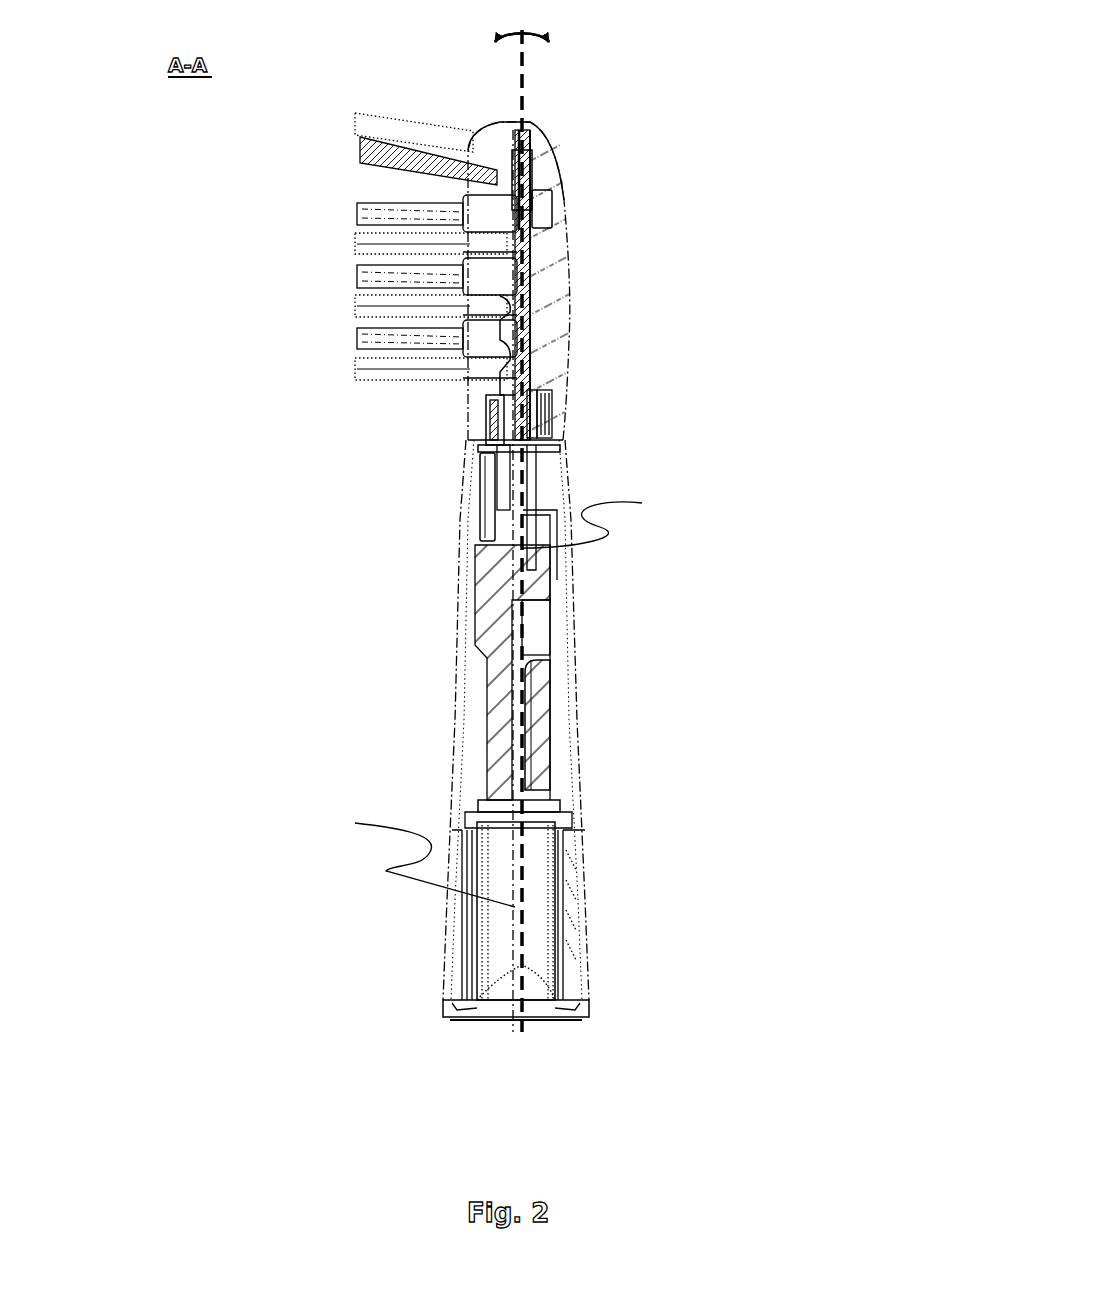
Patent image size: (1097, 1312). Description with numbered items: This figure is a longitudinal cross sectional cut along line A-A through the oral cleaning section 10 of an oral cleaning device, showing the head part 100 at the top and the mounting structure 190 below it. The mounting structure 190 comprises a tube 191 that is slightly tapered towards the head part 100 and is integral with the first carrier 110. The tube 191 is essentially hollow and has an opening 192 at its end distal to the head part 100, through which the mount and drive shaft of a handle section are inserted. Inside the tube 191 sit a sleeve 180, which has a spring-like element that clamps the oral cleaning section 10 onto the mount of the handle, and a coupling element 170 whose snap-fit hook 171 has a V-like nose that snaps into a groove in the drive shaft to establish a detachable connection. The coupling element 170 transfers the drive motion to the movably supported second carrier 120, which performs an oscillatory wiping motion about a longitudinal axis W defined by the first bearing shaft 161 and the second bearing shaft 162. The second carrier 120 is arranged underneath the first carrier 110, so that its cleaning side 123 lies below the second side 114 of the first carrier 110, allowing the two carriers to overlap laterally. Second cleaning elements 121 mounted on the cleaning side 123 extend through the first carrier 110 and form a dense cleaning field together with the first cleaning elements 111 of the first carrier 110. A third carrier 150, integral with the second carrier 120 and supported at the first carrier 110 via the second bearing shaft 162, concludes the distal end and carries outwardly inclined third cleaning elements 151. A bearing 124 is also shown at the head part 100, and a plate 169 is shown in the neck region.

The oral cleaning section 10 is at (676, 68).
The head part 100 is at (260, 209).
The first carrier 110 is at (484, 210).
The first cleaning elements 111 is at (357, 212).
The second side 114 is at (505, 265).
The second carrier 120 is at (545, 315).
The second cleaning elements 121 is at (350, 312).
The cleaning side 123 is at (500, 302).
The bearing 124 is at (596, 230).
The third carrier 150 is at (487, 118).
The third cleaning elements 151 is at (353, 112).
The first bearing shaft 161 is at (524, 458).
The second bearing shaft 162 is at (527, 172).
The spring plate 169 is at (490, 478).
The coupling element 170 is at (490, 605).
The snap-fit hook 171 is at (545, 677).
The sleeve 180 is at (573, 965).
The mounting structure 190 is at (620, 752).
The tube 191 is at (573, 590).
The opening 192 is at (545, 1005).